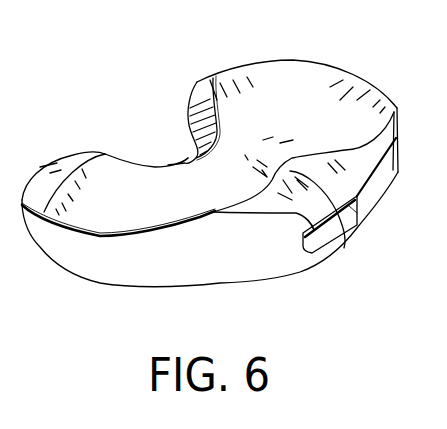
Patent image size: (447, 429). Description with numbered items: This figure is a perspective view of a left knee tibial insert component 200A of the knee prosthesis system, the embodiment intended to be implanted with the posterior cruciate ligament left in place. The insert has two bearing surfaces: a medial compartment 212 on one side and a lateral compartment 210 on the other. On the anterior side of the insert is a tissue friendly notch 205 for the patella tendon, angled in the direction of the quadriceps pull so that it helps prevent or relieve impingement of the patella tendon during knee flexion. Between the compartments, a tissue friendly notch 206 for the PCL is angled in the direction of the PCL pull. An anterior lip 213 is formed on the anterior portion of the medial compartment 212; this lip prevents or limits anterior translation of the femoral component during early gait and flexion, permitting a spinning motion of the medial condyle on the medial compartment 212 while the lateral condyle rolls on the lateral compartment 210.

The tibial insert component 200A is at (93, 127).
The notch for the patella tendon 205 is at (347, 226).
The notch for the PCL 206 is at (190, 132).
The lateral compartment 210 is at (310, 85).
The medial compartment 212 is at (133, 215).
The anterior lip 213 is at (217, 200).